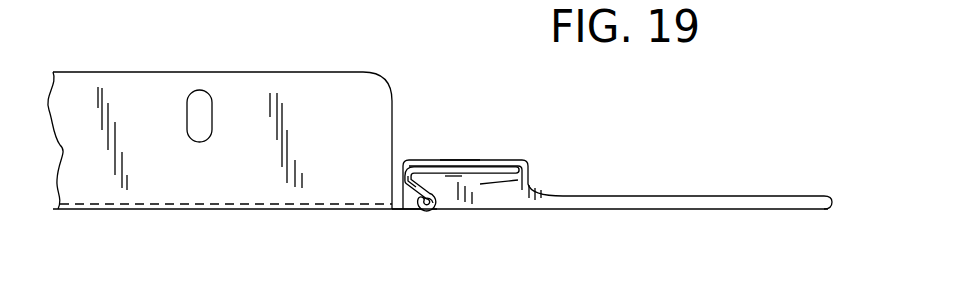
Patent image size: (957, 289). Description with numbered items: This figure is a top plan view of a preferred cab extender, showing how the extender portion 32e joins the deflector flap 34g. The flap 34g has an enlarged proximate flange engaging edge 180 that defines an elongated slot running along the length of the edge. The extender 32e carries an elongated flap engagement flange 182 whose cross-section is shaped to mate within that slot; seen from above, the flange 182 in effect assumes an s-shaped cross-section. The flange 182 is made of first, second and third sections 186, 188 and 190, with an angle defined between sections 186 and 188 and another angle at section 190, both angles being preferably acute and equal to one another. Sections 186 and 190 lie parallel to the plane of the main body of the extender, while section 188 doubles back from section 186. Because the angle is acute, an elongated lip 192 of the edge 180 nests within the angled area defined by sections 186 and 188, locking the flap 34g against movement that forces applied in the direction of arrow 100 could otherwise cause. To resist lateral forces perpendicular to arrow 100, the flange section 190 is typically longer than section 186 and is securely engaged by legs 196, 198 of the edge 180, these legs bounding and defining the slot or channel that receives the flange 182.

The extender portion 32e is at (298, 82).
The deflector flap 34g is at (682, 183).
The arrow indicating direction of applied force 100 is at (811, 180).
The flange engaging edge 180 is at (427, 146).
The flap engagement flange 182 is at (498, 147).
The first section of flange 186 is at (408, 212).
The second section of flange 188 is at (423, 209).
The third section of flange 190 is at (487, 184).
The elongated lip 192 is at (415, 195).
The leg of flange engaging edge 196 is at (460, 158).
The leg of flange engaging edge 198 is at (453, 178).